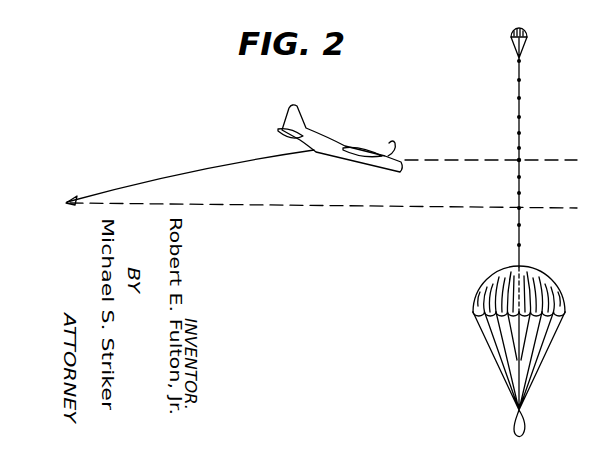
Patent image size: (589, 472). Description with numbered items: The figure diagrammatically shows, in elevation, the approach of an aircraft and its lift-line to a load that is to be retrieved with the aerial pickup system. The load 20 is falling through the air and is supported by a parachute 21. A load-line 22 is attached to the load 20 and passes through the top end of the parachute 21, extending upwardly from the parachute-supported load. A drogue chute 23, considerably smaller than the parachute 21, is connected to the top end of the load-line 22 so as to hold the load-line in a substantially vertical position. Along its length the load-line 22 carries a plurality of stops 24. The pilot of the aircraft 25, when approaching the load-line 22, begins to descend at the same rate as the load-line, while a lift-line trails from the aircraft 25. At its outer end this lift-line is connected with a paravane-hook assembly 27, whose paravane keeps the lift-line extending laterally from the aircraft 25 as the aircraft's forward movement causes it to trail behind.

The load 20 is at (512, 426).
The parachute 21 is at (483, 291).
The load-line 22 is at (518, 166).
The drogue chute 23 is at (526, 31).
The stops 24 is at (521, 159).
The aircraft 25 is at (391, 149).
The paravane-hook assembly 27 is at (69, 199).